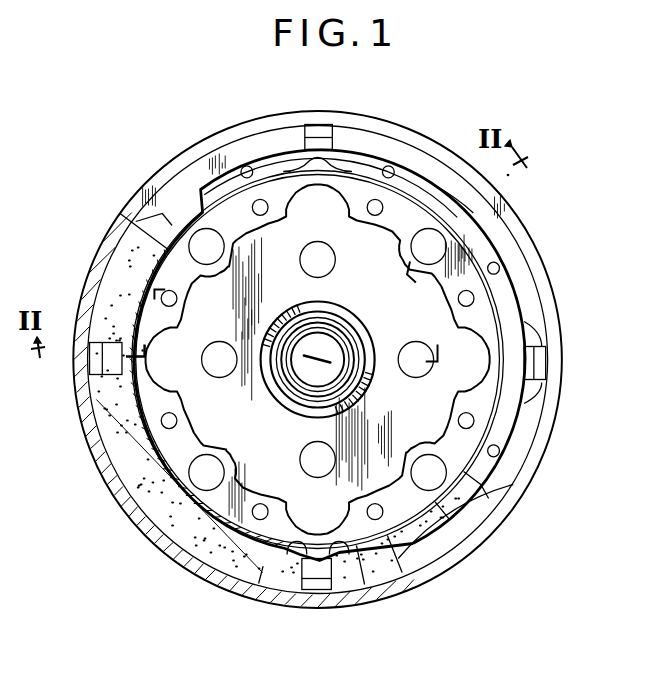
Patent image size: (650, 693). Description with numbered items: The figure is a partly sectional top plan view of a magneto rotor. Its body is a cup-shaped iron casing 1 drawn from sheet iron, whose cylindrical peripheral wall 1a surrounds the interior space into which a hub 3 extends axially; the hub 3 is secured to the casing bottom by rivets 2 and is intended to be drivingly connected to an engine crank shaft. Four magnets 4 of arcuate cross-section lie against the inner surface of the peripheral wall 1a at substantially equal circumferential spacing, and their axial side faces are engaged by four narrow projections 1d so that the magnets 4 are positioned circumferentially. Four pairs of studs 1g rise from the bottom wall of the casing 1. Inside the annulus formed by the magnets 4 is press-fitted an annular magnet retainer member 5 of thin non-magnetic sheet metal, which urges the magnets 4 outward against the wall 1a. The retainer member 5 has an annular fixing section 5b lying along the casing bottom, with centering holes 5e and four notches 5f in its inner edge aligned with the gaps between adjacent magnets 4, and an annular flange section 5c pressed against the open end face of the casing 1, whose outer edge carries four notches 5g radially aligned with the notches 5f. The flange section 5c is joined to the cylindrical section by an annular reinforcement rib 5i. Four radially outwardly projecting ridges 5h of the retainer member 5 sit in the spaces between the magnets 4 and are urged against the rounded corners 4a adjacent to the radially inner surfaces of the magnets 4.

The casing 1 is at (548, 480).
The cylindrical peripheral wall 1a is at (483, 540).
The narrow projections 1d is at (319, 133).
The studs 1g is at (377, 199).
The rivets 2 is at (421, 343).
The hub 3 is at (343, 320).
The magnets 4 is at (541, 393).
The rounded corners 4a is at (345, 552).
The annular magnet retainer member 5 is at (490, 245).
The annular fixing section 5b is at (373, 531).
The annular flange section 5c is at (518, 262).
The centering holes 5e is at (480, 502).
The notches 5f is at (122, 356).
The notches 5g is at (538, 338).
The radially outwardly projecting ridges 5h is at (313, 567).
The annular reinforcement rib 5i is at (193, 210).